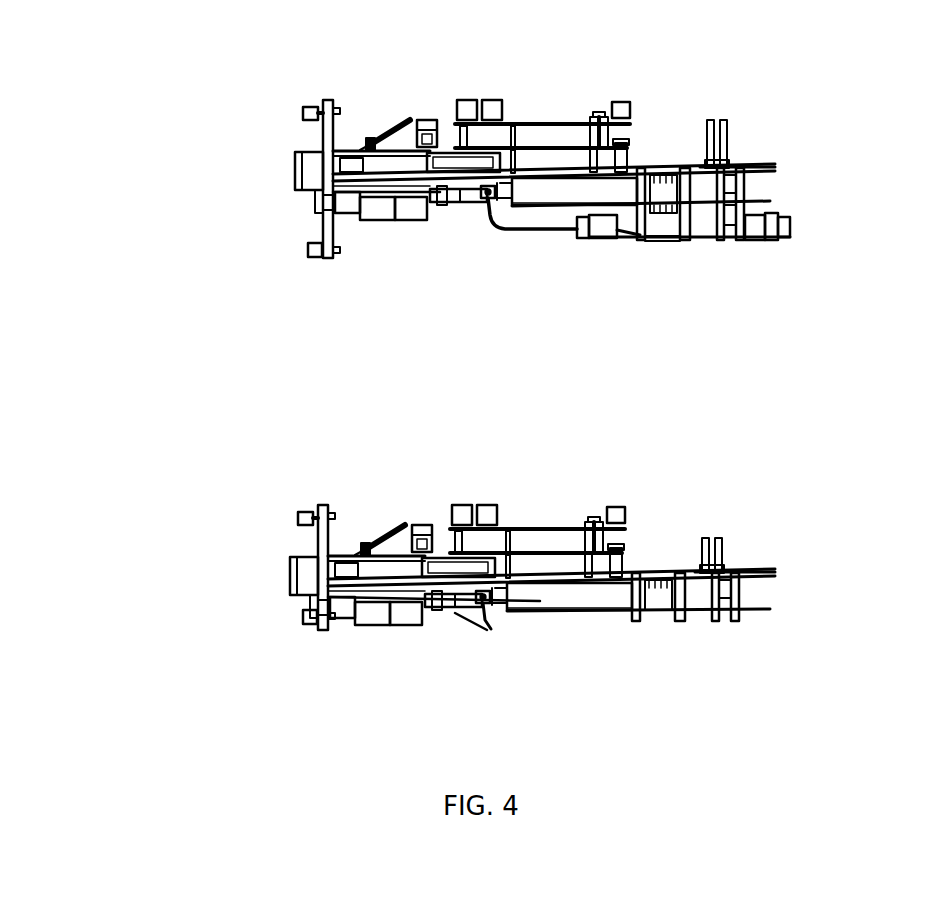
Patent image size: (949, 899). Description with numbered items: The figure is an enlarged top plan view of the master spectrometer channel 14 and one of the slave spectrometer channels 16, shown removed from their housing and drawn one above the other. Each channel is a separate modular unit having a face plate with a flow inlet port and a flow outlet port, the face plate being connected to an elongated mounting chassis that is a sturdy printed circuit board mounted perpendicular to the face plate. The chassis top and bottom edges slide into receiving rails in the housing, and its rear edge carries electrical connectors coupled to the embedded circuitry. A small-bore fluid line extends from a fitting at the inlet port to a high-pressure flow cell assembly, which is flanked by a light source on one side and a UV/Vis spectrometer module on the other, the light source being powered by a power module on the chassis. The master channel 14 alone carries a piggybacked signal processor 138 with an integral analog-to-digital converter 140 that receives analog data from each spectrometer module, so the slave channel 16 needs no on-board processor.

The master spectrometer channel 14 is at (218, 197).
The slave spectrometer channel 16 is at (244, 580).
The signal processor 138 is at (700, 242).
The analog-to-digital converter 140 is at (667, 240).